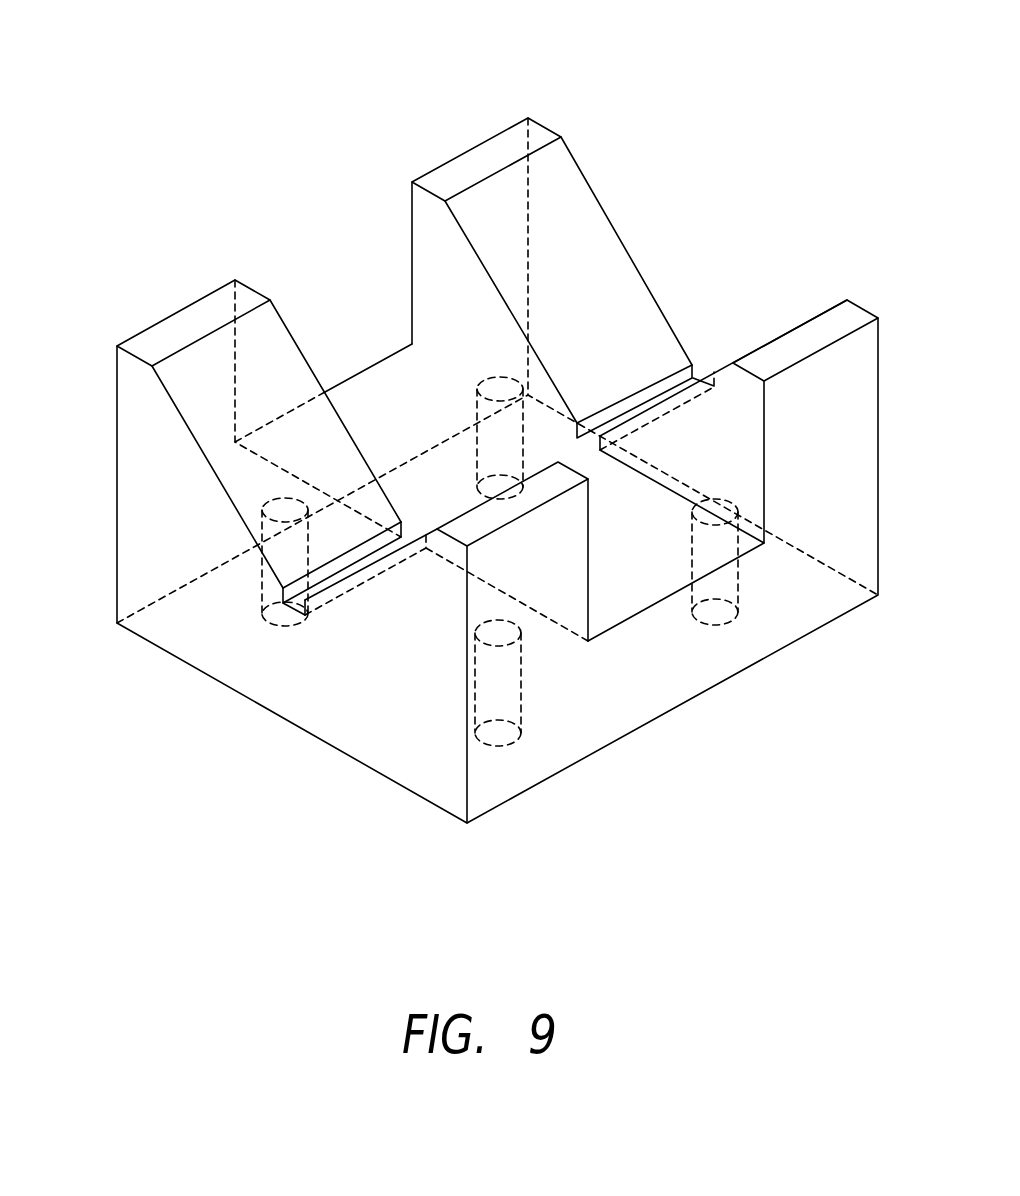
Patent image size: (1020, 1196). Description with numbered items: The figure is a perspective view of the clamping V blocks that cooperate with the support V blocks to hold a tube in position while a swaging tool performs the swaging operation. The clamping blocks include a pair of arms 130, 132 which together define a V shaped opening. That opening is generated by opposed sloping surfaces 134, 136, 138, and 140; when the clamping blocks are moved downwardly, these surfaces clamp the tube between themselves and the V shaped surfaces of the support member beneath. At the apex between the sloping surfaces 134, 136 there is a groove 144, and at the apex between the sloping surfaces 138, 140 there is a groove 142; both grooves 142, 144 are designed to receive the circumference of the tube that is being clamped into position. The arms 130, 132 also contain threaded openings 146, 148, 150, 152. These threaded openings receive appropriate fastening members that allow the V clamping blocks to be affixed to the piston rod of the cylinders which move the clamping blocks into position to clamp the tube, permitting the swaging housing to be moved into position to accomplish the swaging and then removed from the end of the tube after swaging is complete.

The arm 130 is at (550, 219).
The arm 132 is at (217, 383).
The sloping surface 134 is at (567, 213).
The sloping surface 136 is at (822, 307).
The sloping surface 138 is at (200, 385).
The sloping surface 140 is at (463, 508).
The groove 142 is at (293, 607).
The groove 144 is at (695, 366).
The threaded opening 146 is at (723, 575).
The threaded opening 148 is at (508, 690).
The threaded opening 150 is at (263, 583).
The threaded opening 152 is at (518, 432).